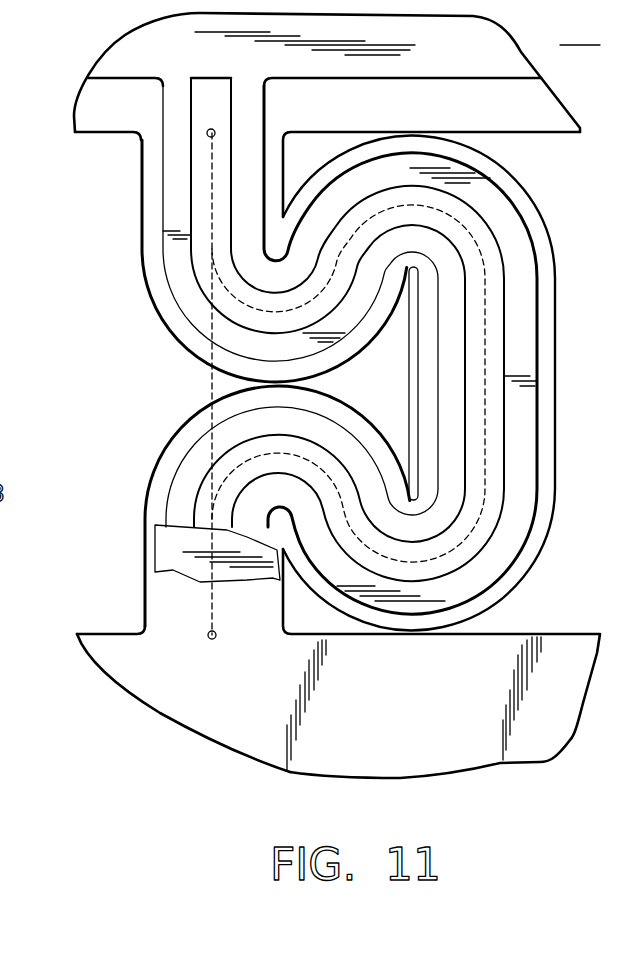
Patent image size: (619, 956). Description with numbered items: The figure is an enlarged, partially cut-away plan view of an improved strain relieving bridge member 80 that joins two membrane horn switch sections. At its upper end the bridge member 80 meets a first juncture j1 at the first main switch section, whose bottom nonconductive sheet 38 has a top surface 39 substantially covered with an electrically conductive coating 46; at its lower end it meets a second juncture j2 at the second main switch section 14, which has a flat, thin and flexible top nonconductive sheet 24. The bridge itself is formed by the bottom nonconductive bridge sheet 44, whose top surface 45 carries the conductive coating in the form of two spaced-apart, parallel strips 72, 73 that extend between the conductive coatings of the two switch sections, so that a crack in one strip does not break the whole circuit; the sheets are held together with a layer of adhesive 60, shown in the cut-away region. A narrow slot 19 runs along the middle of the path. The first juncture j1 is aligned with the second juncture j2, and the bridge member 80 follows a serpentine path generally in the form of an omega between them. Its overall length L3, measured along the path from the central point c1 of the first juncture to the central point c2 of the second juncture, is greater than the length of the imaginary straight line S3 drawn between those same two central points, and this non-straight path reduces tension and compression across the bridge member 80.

The second main switch section 14 is at (543, 633).
The top nonconductive sheet 24 is at (350, 754).
The bottom nonconductive sheet 38 is at (567, 133).
The top surface 39 is at (487, 118).
The electrically conductive coating 46 is at (440, 79).
The bottom nonconductive bridge sheet 44 is at (556, 450).
The top surface 45 is at (550, 412).
The parallel strip 73 is at (539, 266).
The parallel strip 72 is at (467, 322).
The slot 19 is at (429, 383).
The strain relieving bridge member 80 is at (111, 287).
The layer of adhesive 60 is at (170, 550).
The imaginary straight line S3 is at (210, 388).
The overall length L3 is at (482, 477).
The central point c1 is at (215, 131).
The central point c2 is at (216, 637).
The first juncture j1 is at (148, 125).
The second juncture j2 is at (152, 650).